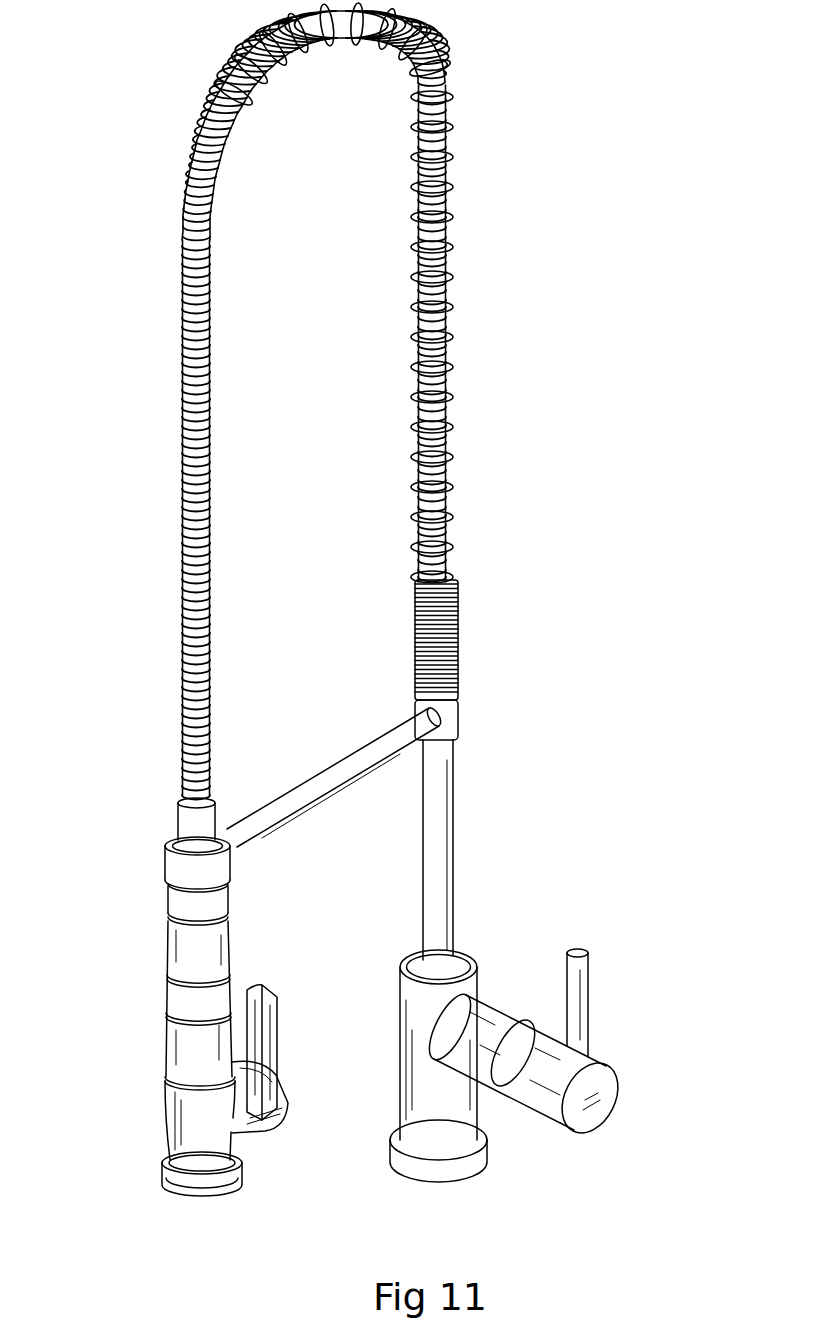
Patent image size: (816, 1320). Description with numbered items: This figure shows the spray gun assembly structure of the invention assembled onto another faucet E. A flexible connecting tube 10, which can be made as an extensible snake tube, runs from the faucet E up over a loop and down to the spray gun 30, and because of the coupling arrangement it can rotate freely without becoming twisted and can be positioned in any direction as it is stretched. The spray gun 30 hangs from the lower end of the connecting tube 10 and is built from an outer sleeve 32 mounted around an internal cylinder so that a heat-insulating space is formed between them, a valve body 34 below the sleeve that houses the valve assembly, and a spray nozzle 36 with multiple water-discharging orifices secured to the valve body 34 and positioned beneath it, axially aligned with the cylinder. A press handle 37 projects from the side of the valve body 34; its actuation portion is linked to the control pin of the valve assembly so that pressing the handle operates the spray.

The connecting tube 10 is at (150, 562).
The spray gun 30 is at (215, 1035).
The outer sleeve 32 is at (232, 934).
The valve body 34 is at (182, 1115).
The spray nozzle 36 is at (212, 1198).
The press handle 37 is at (280, 1030).
The faucet body with handle E is at (613, 1003).